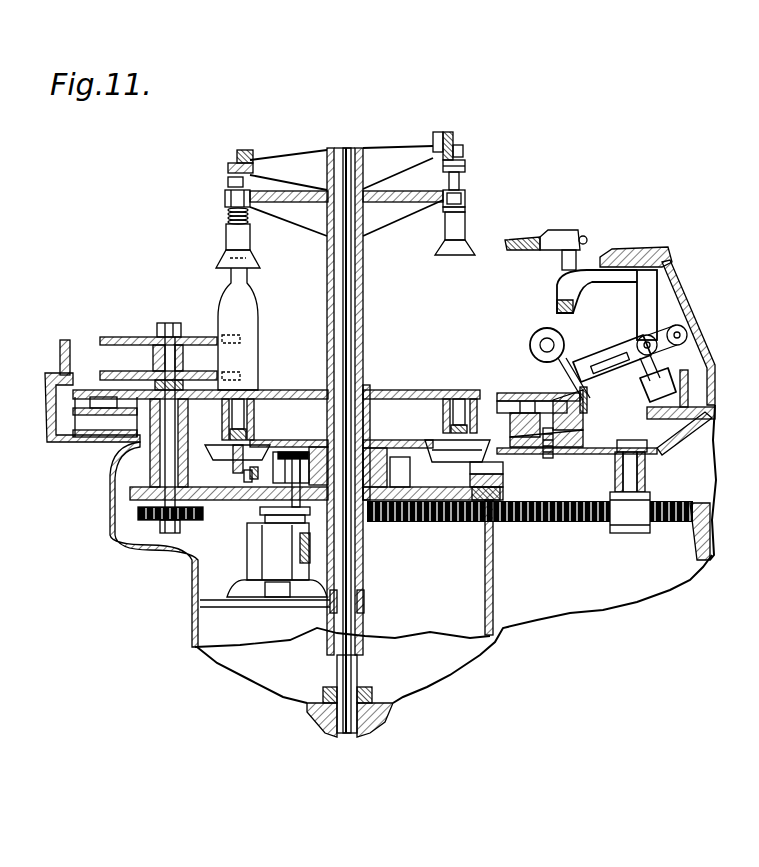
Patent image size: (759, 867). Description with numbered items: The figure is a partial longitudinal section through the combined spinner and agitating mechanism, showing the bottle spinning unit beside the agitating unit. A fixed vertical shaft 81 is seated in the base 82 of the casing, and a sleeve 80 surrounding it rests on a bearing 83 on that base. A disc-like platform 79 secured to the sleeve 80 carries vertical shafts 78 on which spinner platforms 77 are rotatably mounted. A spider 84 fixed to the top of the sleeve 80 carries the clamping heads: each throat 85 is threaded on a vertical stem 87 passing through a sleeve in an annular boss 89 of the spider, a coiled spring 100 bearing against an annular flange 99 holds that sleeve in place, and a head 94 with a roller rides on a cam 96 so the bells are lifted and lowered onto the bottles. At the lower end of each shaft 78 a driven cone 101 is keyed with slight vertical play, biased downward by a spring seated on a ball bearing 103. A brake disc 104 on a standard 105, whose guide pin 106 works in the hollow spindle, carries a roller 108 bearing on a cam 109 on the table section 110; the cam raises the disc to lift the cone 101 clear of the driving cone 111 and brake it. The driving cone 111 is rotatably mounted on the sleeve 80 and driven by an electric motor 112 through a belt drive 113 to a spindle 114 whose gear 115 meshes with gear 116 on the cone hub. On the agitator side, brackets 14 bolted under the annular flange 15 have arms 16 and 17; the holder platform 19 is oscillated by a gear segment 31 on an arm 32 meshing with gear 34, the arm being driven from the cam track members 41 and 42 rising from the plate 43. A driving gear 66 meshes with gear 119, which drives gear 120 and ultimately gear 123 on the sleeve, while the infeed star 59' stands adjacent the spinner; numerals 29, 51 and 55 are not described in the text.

The bracket 14 is at (610, 273).
The annular flange 15 is at (640, 250).
The bracket arm 16 is at (560, 303).
The bracket arm 17 is at (657, 302).
The supporting platform 19 is at (515, 393).
The operating lever 29 is at (528, 238).
The gear segment 31 is at (630, 350).
The arm 32 is at (606, 372).
The gear 34 is at (532, 338).
The track member 41 is at (715, 393).
The track member 42 is at (670, 431).
The plate 43 is at (540, 422).
The clamp bolt plate 51 is at (548, 457).
The clamp block 55 is at (584, 415).
The infeed star 59' is at (158, 417).
The driving gear 66 is at (712, 528).
The spinner platform 77 is at (252, 395).
The vertical shaft 78 is at (470, 392).
The disc-like platform 79 is at (383, 398).
The sleeve 80 is at (362, 323).
The vertical shaft 81 is at (351, 308).
The base 82 is at (390, 712).
The bearing 83 is at (373, 690).
The spider 84 is at (396, 222).
The throat 85 is at (258, 258).
The vertical stem 87 is at (383, 160).
The annular boss 89 is at (465, 196).
The head 94 is at (463, 162).
The cam 96 is at (448, 132).
The annular flange 99 is at (466, 210).
The coiled spring 100 is at (228, 216).
The driven cone 101 is at (496, 468).
The ball bearing 103 is at (457, 449).
The brake disc 104 is at (190, 455).
The standard 105 is at (246, 492).
The guide pin 106 is at (496, 479).
The roller 108 is at (470, 523).
The cam 109 is at (502, 492).
The table section 110 is at (252, 503).
The driving cone 111 is at (405, 440).
The electric motor 112 is at (250, 560).
The belt drive 113 is at (308, 545).
The spindle 114 is at (296, 505).
The gear 115 is at (290, 452).
The gear 116 is at (312, 440).
The gear 119 is at (603, 525).
The gear 120 is at (395, 522).
The gear 123 is at (380, 448).